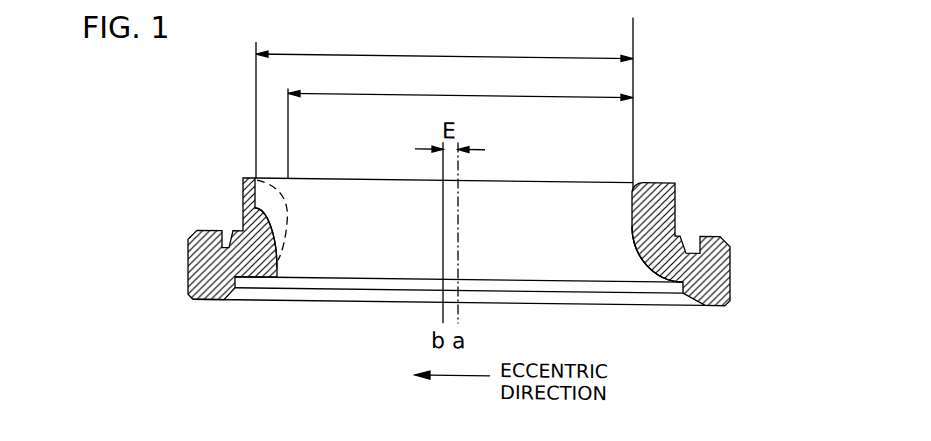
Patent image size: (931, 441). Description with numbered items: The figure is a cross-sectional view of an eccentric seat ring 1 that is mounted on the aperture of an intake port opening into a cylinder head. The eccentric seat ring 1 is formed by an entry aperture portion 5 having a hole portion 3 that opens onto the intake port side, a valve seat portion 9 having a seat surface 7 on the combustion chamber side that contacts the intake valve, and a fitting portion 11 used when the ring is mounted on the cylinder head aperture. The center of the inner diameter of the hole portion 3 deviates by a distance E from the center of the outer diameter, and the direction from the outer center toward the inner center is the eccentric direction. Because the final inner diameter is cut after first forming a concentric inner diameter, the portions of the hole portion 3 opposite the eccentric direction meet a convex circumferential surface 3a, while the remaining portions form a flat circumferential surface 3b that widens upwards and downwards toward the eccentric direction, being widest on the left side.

The eccentric seat ring 1 is at (499, 197).
The hole portion 3 is at (553, 211).
The convex circumferential surface 3a is at (613, 244).
The flat circumferential surface 3b is at (277, 277).
The entry aperture portion 5 is at (675, 185).
The seat surface 7 is at (230, 300).
The valve seat portion 9 is at (459, 290).
The fitting portion 11 is at (732, 267).